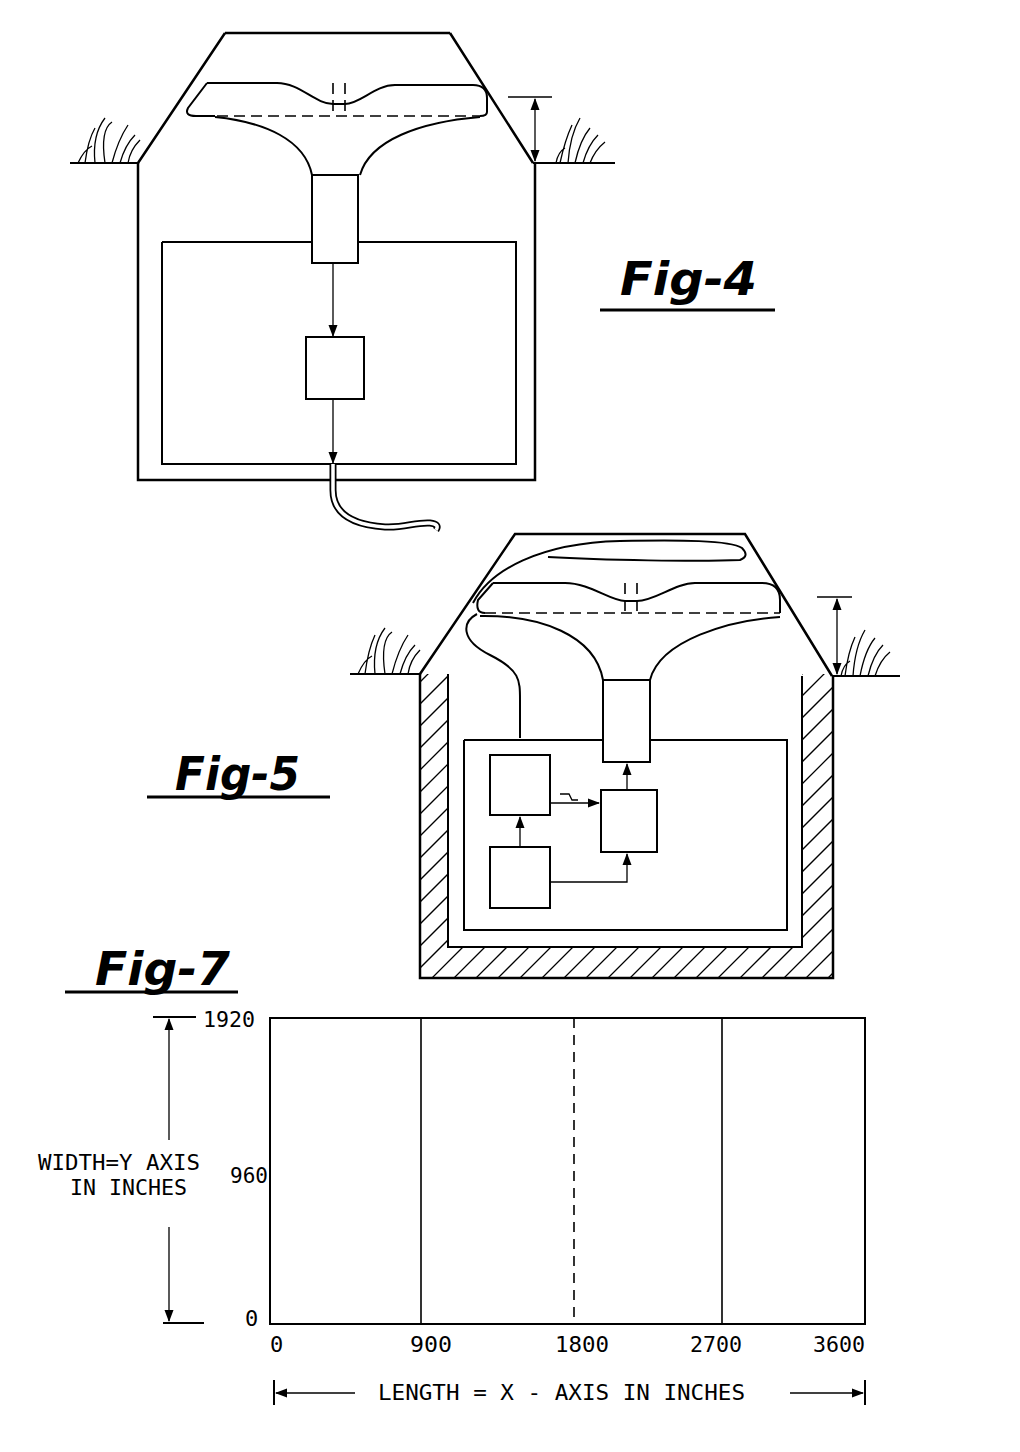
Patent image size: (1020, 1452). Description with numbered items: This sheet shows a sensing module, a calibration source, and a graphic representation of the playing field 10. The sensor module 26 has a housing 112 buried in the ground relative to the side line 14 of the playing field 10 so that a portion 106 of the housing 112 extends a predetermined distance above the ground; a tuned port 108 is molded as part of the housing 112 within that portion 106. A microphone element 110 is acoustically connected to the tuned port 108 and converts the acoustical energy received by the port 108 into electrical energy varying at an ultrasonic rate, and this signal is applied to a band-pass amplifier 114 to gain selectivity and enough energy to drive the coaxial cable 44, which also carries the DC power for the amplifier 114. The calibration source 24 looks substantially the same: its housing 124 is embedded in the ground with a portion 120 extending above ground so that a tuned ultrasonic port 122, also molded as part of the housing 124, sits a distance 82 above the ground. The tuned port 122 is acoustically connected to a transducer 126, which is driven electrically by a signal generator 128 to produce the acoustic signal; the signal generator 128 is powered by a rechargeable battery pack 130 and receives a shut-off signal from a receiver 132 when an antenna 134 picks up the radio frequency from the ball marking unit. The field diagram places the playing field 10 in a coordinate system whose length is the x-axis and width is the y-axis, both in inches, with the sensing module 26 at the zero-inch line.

In FIG. 4, the playing field 10 is at (110, 148).
In FIG. 5, the playing field 10 is at (428, 650).
In FIG. 7, the playing field 10 is at (338, 1000).
In FIG. 7, the side line 14 is at (300, 1325).
In FIG. 5, the calibration source 24 is at (735, 493).
In FIG. 4, the sensor module 26 is at (344, 83).
In FIG. 4, the coaxial cable 44 is at (395, 527).
In FIG. 4, the distance 82 is at (530, 129).
In FIG. 5, the distance 82 is at (834, 635).
In FIG. 4, the portion of the housing 106 is at (292, 38).
In FIG. 4, the tuned port 108 is at (458, 106).
In FIG. 4, the microphone element 110 is at (338, 200).
In FIG. 4, the housing 112 is at (512, 210).
In FIG. 4, the band-pass amplifier 114 is at (336, 336).
In FIG. 5, the portion of the housing 120 is at (683, 535).
In FIG. 5, the tuned ultrasonic port 122 is at (750, 606).
In FIG. 5, the housing 124 is at (436, 790).
In FIG. 5, the transducer 126 is at (643, 704).
In FIG. 5, the signal generator 128 is at (638, 805).
In FIG. 5, the rechargeable battery pack 130 is at (535, 893).
In FIG. 5, the receiver 132 is at (525, 770).
In FIG. 5, the antenna 134 is at (555, 648).